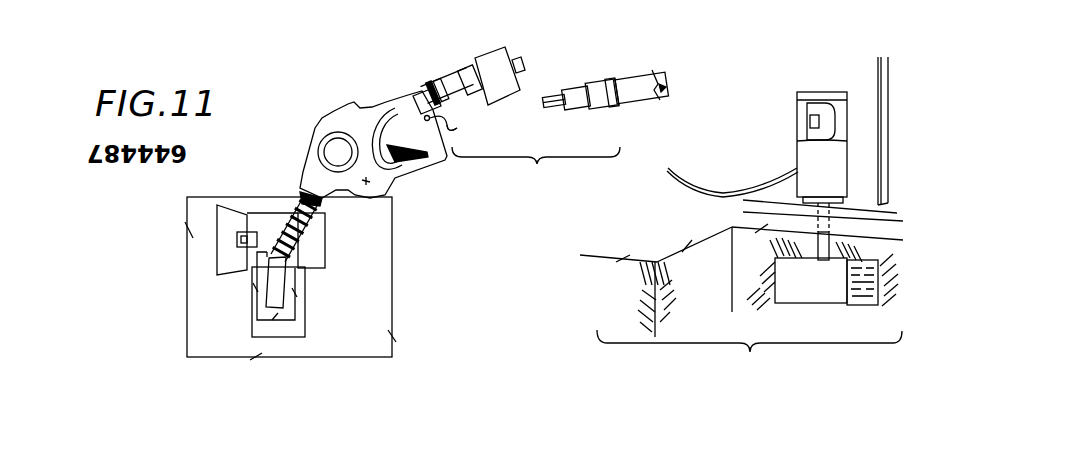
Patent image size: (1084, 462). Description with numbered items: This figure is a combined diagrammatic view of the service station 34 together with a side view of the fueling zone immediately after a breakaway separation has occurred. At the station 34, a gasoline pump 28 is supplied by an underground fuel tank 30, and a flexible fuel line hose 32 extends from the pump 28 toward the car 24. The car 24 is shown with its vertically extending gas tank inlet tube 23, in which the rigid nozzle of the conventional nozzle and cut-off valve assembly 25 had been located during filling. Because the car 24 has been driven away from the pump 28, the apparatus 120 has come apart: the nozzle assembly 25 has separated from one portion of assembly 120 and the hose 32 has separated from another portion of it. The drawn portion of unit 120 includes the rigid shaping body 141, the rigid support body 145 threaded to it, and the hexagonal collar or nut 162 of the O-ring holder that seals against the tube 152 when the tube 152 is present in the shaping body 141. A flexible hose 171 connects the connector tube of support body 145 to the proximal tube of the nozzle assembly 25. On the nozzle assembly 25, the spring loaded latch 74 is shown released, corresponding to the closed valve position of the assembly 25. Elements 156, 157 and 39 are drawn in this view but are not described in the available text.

The nozzle and cut-off valve assembly 25 is at (329, 118).
The flexible hose 171 is at (441, 86).
The support body 145 is at (468, 66).
The shaping body 141 is at (505, 104).
The hexagonal collar or nut 162 is at (514, 62).
The spring loaded latch 74 is at (450, 130).
The hose tube end 156 is at (548, 96).
The hose tube 157 is at (557, 107).
The tube 152 is at (575, 108).
The fuel line hose 32 is at (653, 84).
The apparatus (unit) 120 is at (536, 167).
The automobile (car) 24 is at (203, 315).
The gas tank inlet tube 23 is at (300, 297).
The gasoline pump 28 is at (830, 184).
The ground fill 39 is at (658, 248).
The underground fuel tank 30 is at (813, 292).
The service station 34 is at (749, 354).